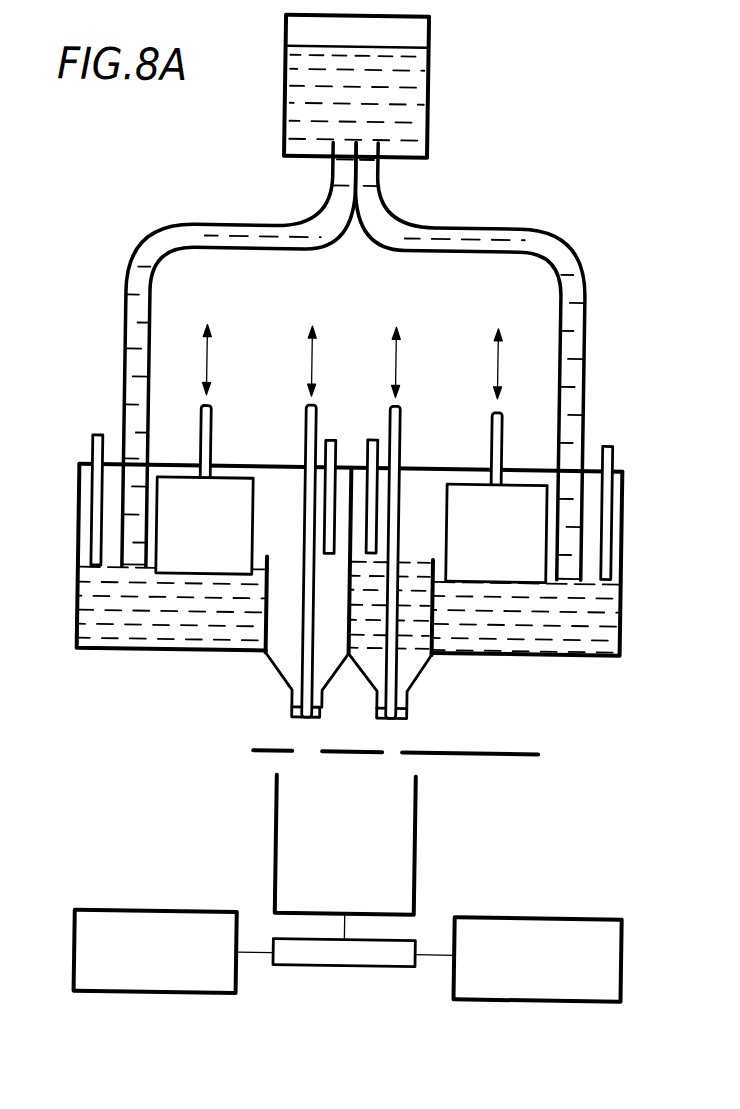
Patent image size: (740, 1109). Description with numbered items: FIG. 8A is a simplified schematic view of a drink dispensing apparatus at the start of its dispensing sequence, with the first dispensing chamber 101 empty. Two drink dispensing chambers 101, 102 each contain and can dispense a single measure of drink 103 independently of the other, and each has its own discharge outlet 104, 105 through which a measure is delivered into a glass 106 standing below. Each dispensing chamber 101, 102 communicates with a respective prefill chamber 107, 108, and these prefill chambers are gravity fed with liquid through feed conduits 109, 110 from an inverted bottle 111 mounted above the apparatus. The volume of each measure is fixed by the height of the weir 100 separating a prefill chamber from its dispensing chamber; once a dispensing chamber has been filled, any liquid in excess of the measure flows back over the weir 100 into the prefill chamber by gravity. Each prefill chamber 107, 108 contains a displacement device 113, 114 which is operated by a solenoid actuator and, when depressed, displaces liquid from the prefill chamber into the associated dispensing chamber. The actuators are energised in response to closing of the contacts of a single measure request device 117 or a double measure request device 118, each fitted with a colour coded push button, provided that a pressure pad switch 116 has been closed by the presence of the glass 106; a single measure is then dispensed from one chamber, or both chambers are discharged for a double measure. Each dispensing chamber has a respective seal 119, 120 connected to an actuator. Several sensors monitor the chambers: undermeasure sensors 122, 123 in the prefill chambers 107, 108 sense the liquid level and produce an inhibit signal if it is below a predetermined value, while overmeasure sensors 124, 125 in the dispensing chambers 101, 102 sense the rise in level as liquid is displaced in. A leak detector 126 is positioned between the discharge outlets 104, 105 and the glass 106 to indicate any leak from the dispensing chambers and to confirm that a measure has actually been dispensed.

The weir 100 is at (384, 584).
The drink dispensing chamber 101 is at (284, 680).
The drink dispensing chamber 102 is at (410, 682).
The measure of drink 103 is at (393, 561).
The discharge outlet 104 is at (274, 568).
The discharge outlet 105 is at (365, 561).
The glass 106 is at (315, 857).
The prefill chamber 107 is at (145, 557).
The prefill chamber 108 is at (555, 563).
The feed conduit 109 is at (213, 354).
The feed conduit 110 is at (492, 362).
The bottle 111 is at (327, 86).
The displacement device 113 is at (209, 449).
The displacement device 114 is at (497, 455).
The pressure pad switch 116 is at (344, 971).
The single measure request device 117 is at (156, 930).
The double measure request device 118 is at (537, 940).
The seal 119 is at (326, 727).
The seal 120 is at (412, 728).
The undermeasure sensor 122 is at (74, 493).
The undermeasure sensor 123 is at (632, 507).
The overmeasure sensor 124 is at (344, 474).
The overmeasure sensor 125 is at (346, 521).
The leak detector 126 is at (399, 731).